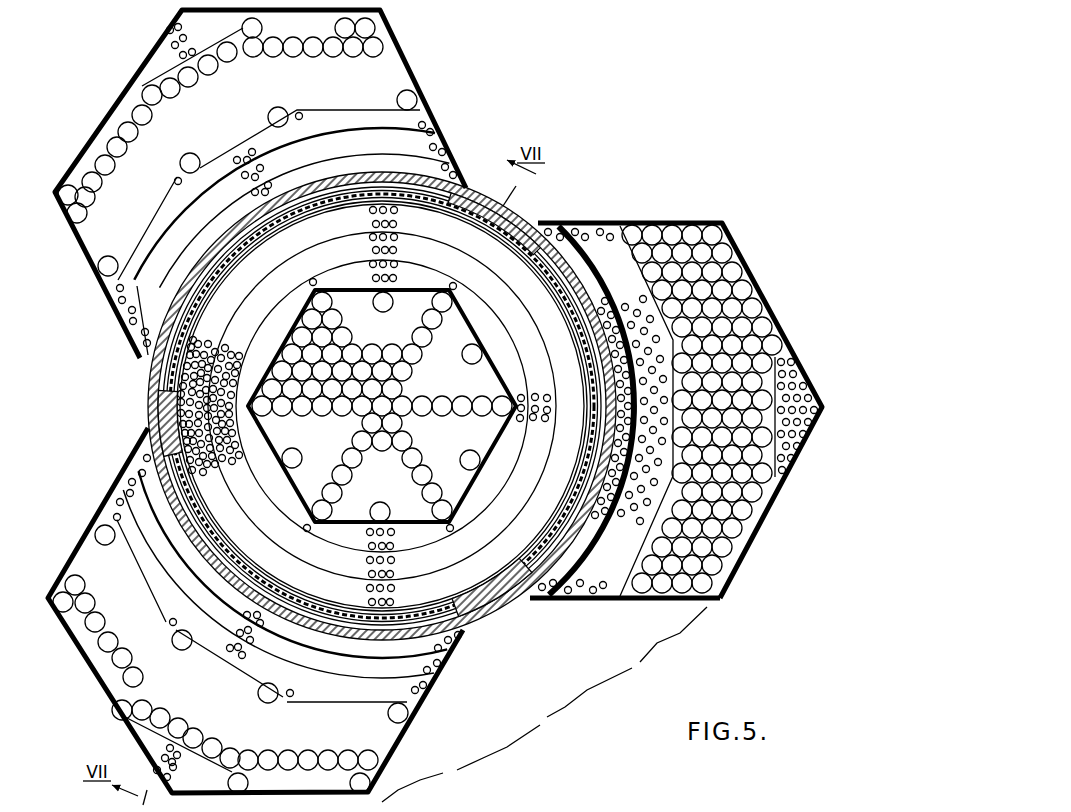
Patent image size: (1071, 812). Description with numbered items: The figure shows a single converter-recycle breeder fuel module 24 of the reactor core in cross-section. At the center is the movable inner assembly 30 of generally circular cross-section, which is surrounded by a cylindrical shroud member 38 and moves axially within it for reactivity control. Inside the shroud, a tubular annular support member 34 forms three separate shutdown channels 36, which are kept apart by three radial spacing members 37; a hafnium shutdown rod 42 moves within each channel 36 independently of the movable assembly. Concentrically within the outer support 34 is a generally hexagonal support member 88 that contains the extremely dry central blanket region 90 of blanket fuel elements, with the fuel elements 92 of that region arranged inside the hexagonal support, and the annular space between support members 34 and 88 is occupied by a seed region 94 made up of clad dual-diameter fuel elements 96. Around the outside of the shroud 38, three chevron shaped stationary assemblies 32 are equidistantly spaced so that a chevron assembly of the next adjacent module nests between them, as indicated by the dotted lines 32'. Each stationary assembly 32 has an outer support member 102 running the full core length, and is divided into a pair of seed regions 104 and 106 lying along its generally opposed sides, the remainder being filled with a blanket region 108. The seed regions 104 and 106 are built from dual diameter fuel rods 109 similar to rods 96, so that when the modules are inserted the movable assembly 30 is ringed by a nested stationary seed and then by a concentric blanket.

The converter-recycle breeder fuel module 24 is at (339, 409).
The movable inner assembly 30 is at (472, 583).
The chevron shaped stationary assembly 32 is at (435, 401).
The nested chevron-shaped assembly of adjacent module 32' is at (625, 619).
The annular support member 34 is at (468, 218).
The shutdown channel 36 is at (558, 297).
The radial spacing member 37 is at (172, 401).
The cylindrical shroud member 38 is at (510, 216).
The shutdown rod 42 is at (403, 610).
The hexagonal support member 88 is at (382, 405).
The blanket region 90 is at (353, 313).
The fuel element spokes 92 is at (421, 510).
The seed region 94 is at (253, 503).
The clad fuel element 96 is at (532, 421).
The outer support member 102 is at (678, 223).
The seed region 104 is at (597, 262).
The seed region 106 is at (798, 380).
The blanket region 108 is at (742, 328).
The dual diameter fuel rod 109 is at (272, 640).